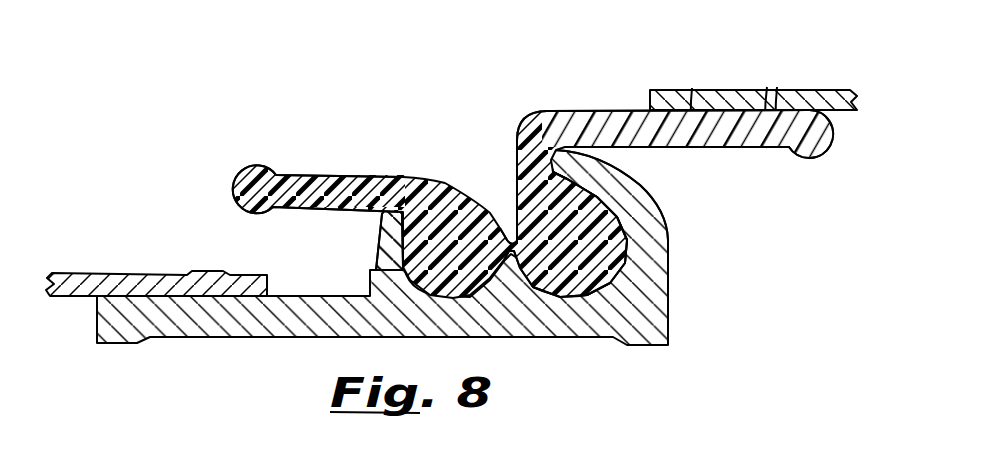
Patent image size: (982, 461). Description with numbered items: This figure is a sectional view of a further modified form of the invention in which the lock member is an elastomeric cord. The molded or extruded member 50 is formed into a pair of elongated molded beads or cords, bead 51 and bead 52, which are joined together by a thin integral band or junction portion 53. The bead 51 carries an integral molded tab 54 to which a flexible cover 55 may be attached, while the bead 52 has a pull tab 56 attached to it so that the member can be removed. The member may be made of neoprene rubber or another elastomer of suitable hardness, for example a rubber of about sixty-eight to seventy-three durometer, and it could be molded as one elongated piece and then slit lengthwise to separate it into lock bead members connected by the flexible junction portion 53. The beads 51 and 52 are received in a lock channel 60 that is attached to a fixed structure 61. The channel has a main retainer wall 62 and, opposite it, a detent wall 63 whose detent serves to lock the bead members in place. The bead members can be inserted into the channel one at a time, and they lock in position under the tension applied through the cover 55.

The molded or extruded member 50 is at (523, 107).
The bead 51 is at (606, 248).
The bead 52 is at (418, 262).
The junction portion 53 is at (510, 255).
The tab 54 is at (593, 110).
The flexible cover 55 is at (727, 92).
The pull tab 56 is at (338, 178).
The lock channel 60 is at (598, 328).
The fixed structure 61 is at (74, 280).
The main retainer wall 62 is at (650, 210).
The detent wall 63 is at (388, 245).